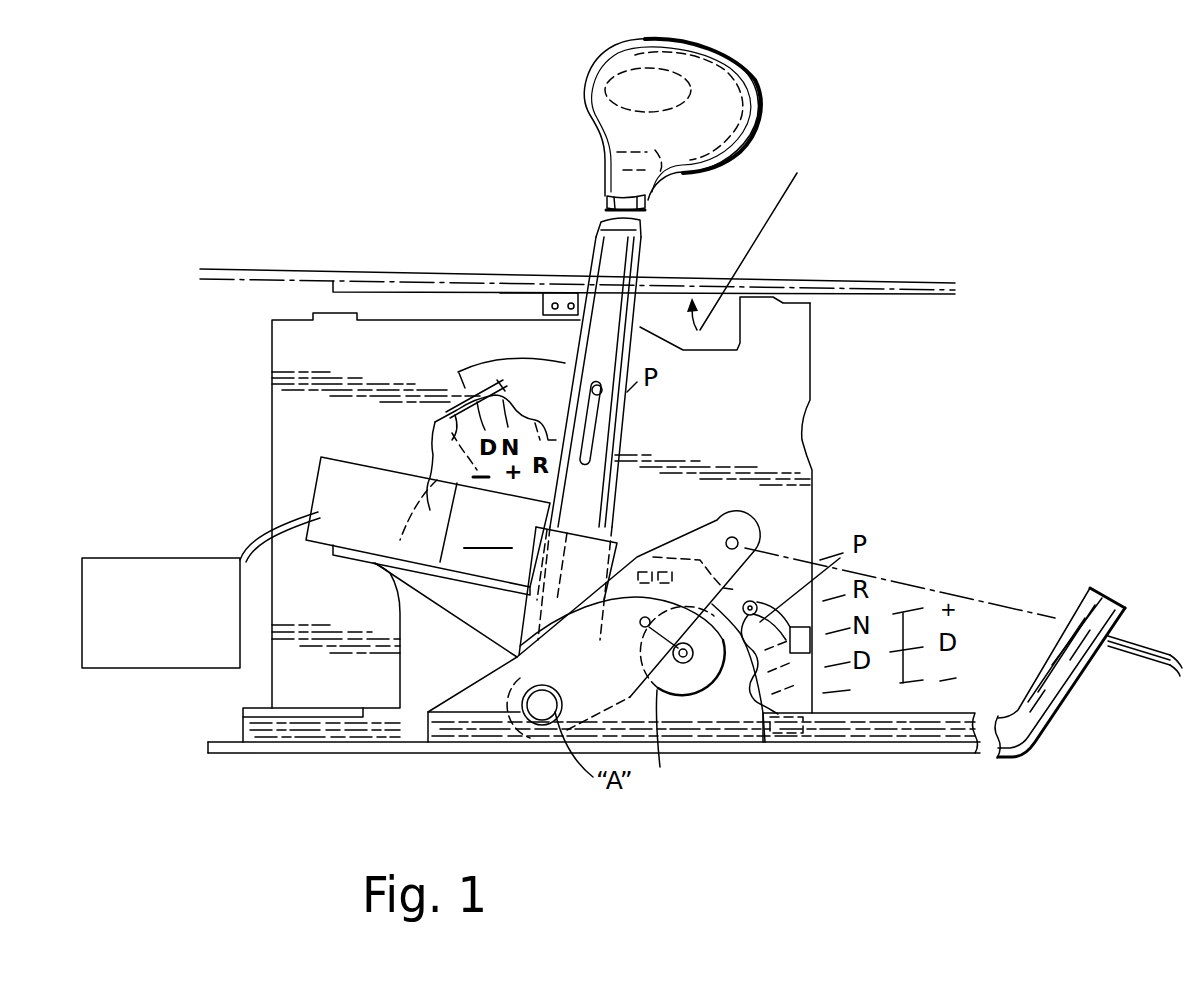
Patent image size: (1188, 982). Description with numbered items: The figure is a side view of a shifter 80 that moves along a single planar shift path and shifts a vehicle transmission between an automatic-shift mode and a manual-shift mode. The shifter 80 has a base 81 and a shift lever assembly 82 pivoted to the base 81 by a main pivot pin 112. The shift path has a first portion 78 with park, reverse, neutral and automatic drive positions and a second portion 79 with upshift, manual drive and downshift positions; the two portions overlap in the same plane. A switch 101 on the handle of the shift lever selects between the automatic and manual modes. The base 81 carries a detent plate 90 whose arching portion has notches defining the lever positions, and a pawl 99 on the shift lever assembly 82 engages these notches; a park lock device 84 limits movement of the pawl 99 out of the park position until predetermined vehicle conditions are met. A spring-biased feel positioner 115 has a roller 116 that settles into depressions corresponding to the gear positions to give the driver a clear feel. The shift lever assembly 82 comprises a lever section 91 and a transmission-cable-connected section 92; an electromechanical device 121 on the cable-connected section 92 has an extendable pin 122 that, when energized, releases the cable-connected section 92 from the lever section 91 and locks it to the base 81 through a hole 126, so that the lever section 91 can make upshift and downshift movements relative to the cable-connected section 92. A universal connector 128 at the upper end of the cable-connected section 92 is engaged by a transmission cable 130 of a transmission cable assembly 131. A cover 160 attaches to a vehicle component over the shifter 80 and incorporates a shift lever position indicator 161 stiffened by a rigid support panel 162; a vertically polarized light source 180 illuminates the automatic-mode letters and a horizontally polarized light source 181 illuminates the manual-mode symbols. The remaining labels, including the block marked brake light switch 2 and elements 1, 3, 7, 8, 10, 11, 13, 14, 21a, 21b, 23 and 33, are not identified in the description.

The shifter assembly 1 is at (778, 272).
The brake light switch 2 is at (140, 668).
The cable 3 is at (253, 533).
The base bracket 7 is at (463, 742).
The shift lever assembly 8 is at (655, 252).
The shift lever 10 is at (630, 277).
The lever sleeve 11 is at (532, 623).
The knob 13 is at (740, 97).
The collar 14 is at (643, 237).
The floor mount 21a is at (347, 758).
The floor mount 21b is at (828, 760).
The slot 23 is at (593, 435).
The lever lower portion 33 is at (488, 533).
The first portion of shift path 78 is at (505, 376).
The second portion of shift path 79 is at (458, 403).
The shifter 80 is at (933, 150).
The base 81 is at (284, 758).
The shift lever assembly 82 is at (398, 355).
The park lock device 84 is at (314, 484).
The detent plate 90 is at (805, 345).
The lever section 91 is at (632, 540).
The transmission-cable-connected section 92 is at (622, 706).
The pawl 99 is at (594, 386).
The switch 101 is at (620, 162).
The main pivot pin 112 is at (542, 712).
The feel positioner 115 is at (757, 600).
The roller 116 is at (780, 520).
The electromechanical device 121 is at (717, 675).
The extendable pin 122 is at (641, 618).
The hole in base 126 is at (677, 695).
The universal connector 128 is at (750, 513).
The transmission cable 130 is at (998, 598).
The transmission cable assembly 131 is at (1145, 642).
The cover 160 is at (883, 281).
The shift lever position indicator 161 is at (763, 235).
The rigid support panel 162 is at (830, 288).
The vertically polarized light source 180 is at (553, 296).
The horizontally polarized light source 181 is at (572, 296).